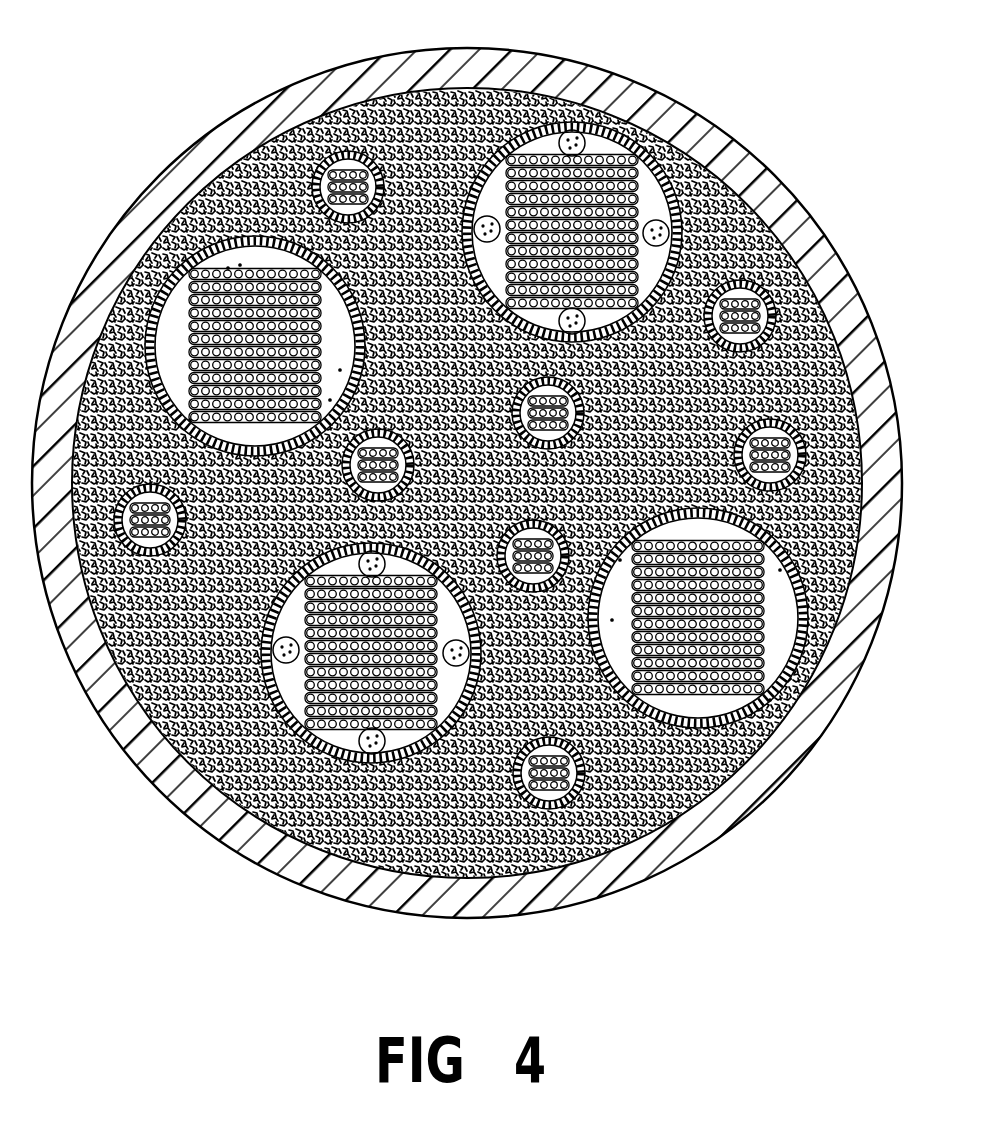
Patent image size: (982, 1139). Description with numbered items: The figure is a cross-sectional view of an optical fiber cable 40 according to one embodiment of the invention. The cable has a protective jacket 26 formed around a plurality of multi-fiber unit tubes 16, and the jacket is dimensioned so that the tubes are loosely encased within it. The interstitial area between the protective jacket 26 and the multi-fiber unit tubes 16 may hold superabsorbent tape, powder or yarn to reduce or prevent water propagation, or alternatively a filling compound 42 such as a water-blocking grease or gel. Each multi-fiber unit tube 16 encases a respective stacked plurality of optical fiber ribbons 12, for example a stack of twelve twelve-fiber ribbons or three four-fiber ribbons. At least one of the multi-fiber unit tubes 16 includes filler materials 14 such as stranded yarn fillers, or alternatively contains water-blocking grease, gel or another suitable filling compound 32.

The optical fiber cable 40 is at (115, 55).
The protective jacket 26 is at (280, 107).
The filling compound 42 is at (178, 232).
The filler materials 14 is at (472, 222).
The multi-fiber unit tubes 16 is at (350, 300).
The optical fiber ribbons 12 is at (418, 557).
The filling compound 32 is at (380, 430).